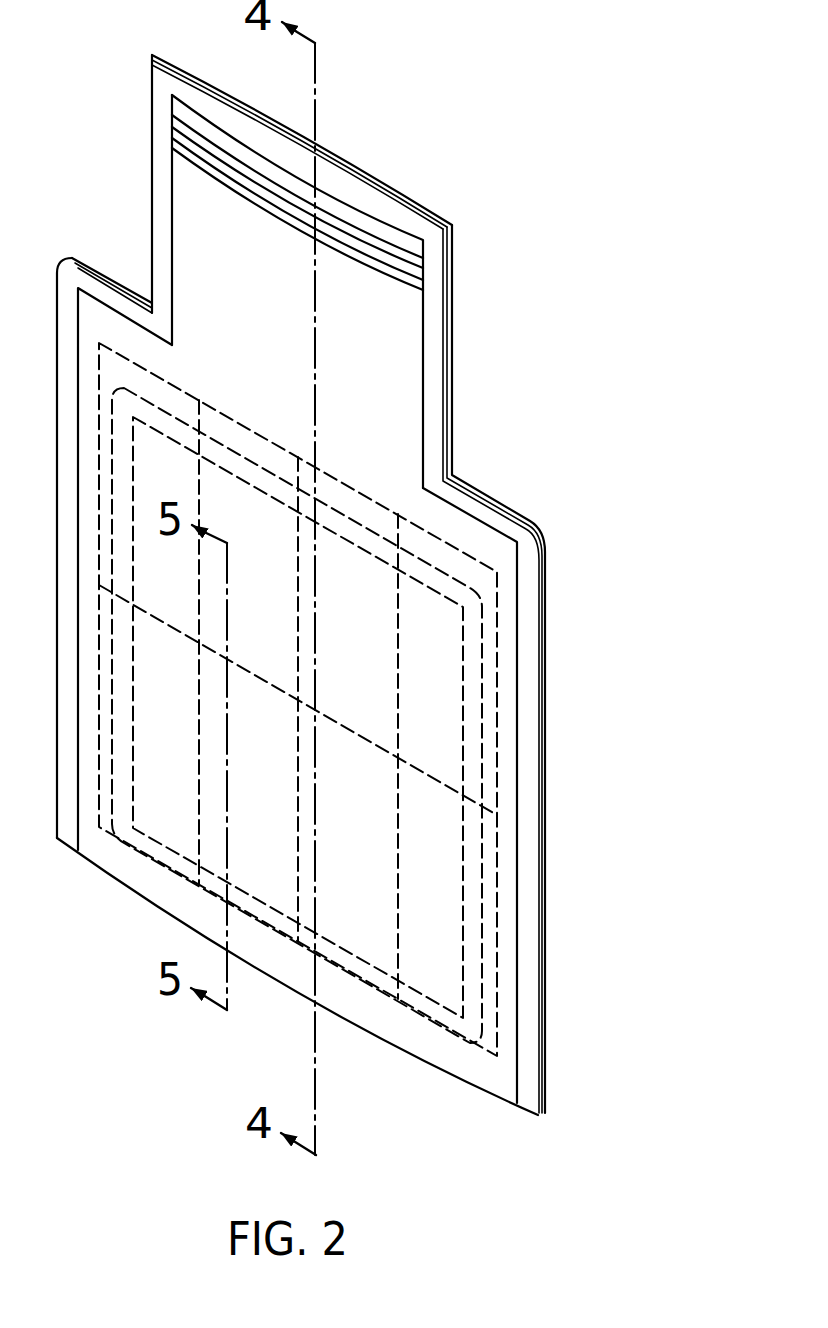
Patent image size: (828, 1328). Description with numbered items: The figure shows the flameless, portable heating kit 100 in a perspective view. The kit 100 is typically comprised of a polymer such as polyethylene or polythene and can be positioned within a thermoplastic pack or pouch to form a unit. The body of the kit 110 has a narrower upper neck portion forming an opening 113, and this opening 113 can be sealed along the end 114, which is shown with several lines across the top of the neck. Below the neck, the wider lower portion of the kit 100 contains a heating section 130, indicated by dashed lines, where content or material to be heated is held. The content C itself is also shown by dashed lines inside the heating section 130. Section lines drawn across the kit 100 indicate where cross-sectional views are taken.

The package 100 is at (387, 585).
The pouch body 110 is at (301, 585).
The neck portion 113 is at (273, 271).
The tear lines 114 is at (280, 190).
The internal compartment 130 is at (498, 583).
The cavity C is at (477, 729).